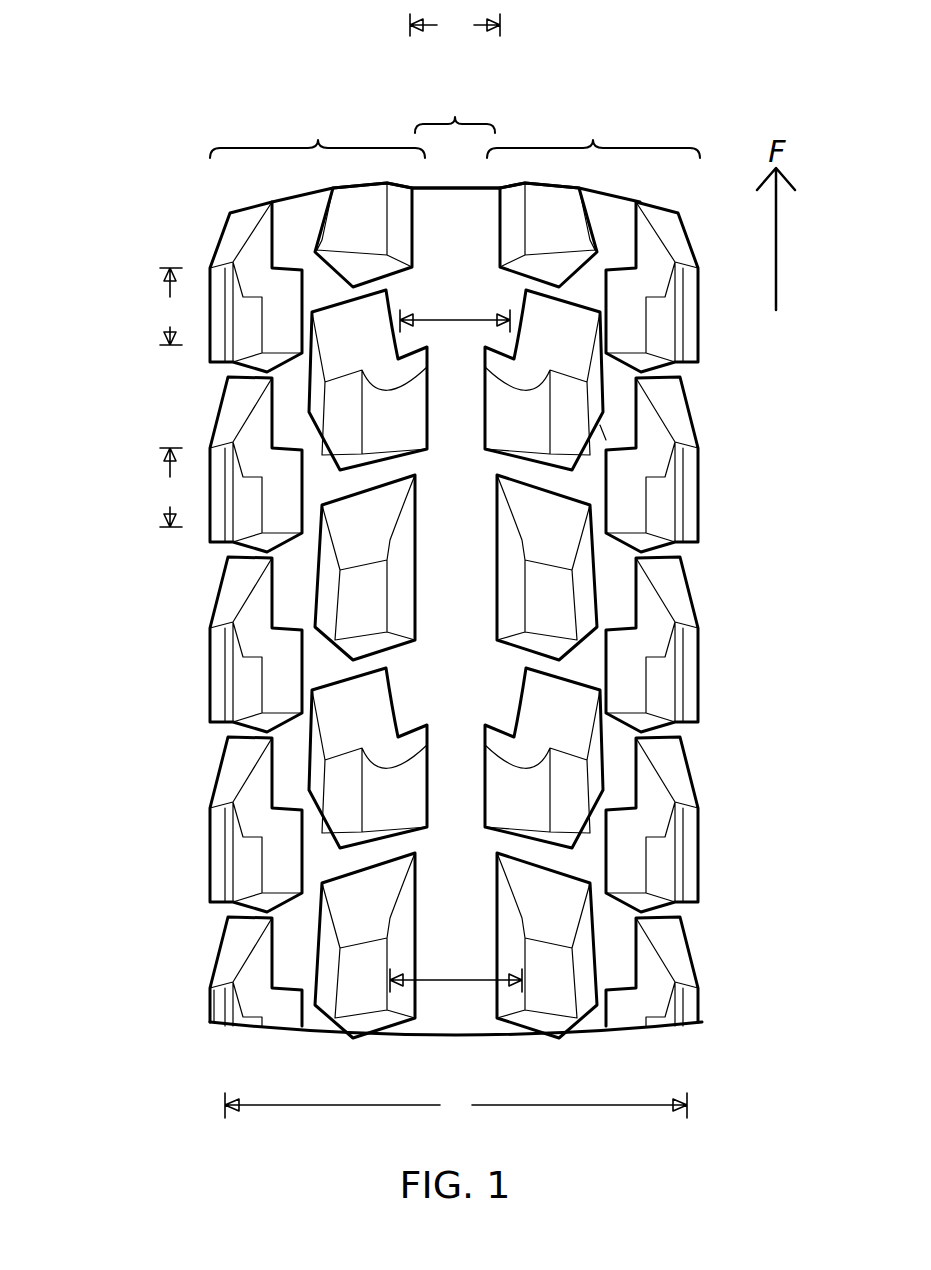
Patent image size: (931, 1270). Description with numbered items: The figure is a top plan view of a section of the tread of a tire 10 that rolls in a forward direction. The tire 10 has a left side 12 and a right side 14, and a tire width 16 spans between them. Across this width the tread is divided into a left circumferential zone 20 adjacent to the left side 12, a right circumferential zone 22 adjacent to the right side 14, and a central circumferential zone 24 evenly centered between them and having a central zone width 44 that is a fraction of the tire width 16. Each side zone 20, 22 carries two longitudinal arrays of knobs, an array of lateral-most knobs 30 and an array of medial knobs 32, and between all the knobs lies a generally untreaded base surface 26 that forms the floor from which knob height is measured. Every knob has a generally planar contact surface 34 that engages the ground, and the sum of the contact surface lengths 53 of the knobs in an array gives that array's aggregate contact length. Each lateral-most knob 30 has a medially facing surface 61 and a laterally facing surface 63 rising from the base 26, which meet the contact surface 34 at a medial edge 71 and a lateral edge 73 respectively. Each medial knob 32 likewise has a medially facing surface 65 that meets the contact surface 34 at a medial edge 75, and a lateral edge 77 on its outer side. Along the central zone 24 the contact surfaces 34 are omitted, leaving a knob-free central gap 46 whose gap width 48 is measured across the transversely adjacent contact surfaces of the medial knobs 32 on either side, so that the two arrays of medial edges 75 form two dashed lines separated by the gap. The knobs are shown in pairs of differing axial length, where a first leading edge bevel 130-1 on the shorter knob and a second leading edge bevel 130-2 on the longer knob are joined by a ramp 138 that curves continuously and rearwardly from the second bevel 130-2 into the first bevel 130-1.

The tire 10 is at (98, 141).
The left side 12 is at (165, 628).
The right side 14 is at (747, 628).
The tire width 16 is at (456, 1105).
The left circumferential zone 20 is at (317, 133).
The right circumferential zone 22 is at (593, 133).
The central circumferential zone 24 is at (455, 104).
The untreaded base surface 26 is at (445, 472).
The lateral-most knobs 30 is at (222, 828).
The medial knobs 32 is at (525, 1021).
The contact surface 34 is at (600, 470).
The central zone width 44 is at (455, 25).
The central gap 46 is at (461, 211).
The gap width 48 is at (457, 320).
The contact surface length 53 is at (170, 397).
The medially facing surface 61 is at (690, 372).
The laterally facing surface 63 is at (700, 330).
The medially facing surface 65 is at (490, 418).
The medial edge 71 is at (268, 678).
The lateral edge 73 is at (700, 650).
The medial edge 75 is at (502, 556).
The lateral edge 77 is at (593, 953).
The first leading edge bevel 130-1 is at (350, 693).
The second leading edge bevel 130-2 is at (430, 740).
The ramp 138 is at (382, 726).